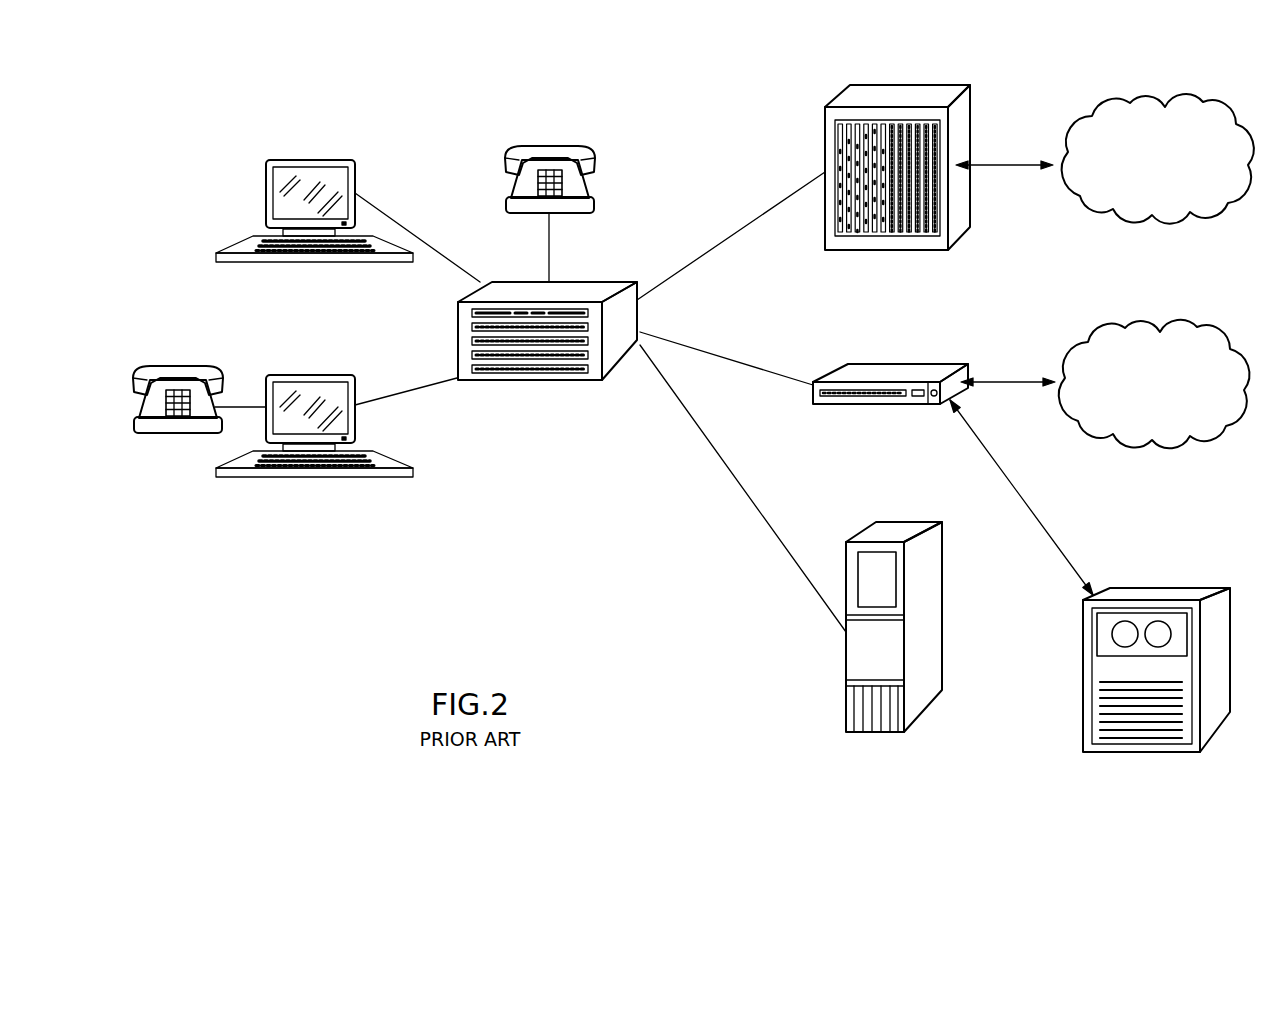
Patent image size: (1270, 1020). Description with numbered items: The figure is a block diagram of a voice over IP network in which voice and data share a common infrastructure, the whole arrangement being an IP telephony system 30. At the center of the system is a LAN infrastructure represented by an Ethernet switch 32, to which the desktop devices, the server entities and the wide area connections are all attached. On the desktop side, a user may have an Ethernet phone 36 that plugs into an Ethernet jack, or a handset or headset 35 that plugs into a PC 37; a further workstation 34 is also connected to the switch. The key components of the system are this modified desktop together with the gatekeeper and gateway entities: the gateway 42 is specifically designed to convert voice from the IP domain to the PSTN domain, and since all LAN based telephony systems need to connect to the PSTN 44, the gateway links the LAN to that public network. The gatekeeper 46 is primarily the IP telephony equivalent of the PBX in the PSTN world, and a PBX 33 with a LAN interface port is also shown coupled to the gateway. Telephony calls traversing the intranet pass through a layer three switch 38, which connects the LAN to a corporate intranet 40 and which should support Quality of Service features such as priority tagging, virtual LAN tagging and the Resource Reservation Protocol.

The IP telephony system 30 is at (322, 578).
The Ethernet switch 32 is at (605, 282).
The PBX 33 is at (1150, 590).
The workstation 34 is at (318, 160).
The handset or headset 35 is at (188, 363).
The Ethernet phone 36 is at (553, 144).
The PC 37 is at (320, 374).
The Layer 3 switch 38 is at (905, 90).
The corporate intranet 40 is at (1142, 102).
The gateway 42 is at (902, 378).
The PSTN 44 is at (1165, 440).
The gatekeeper 46 is at (930, 622).